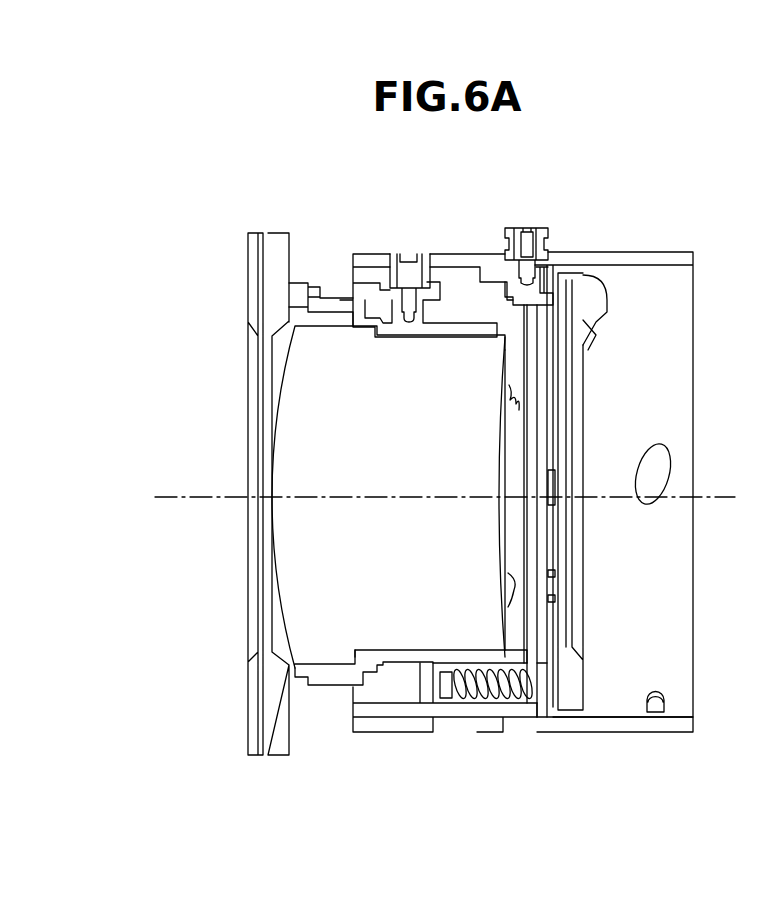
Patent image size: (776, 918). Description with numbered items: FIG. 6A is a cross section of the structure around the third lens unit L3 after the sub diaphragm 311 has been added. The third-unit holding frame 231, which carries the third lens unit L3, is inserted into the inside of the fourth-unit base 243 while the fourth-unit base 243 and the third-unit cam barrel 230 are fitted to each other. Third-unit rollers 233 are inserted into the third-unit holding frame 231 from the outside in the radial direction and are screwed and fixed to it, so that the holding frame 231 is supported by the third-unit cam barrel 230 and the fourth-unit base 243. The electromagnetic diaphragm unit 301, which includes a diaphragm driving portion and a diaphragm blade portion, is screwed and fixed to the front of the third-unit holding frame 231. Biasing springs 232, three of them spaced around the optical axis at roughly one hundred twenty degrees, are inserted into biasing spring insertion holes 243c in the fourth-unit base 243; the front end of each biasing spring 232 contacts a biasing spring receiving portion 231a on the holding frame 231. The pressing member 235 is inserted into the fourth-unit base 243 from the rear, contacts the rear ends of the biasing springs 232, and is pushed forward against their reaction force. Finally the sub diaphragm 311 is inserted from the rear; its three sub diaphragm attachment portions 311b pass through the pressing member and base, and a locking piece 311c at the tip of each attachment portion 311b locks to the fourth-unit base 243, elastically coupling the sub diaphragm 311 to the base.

The electromagnetic diaphragm unit 301 is at (253, 283).
The third lens unit L3 is at (312, 395).
The third-unit holding frame 231 is at (340, 297).
The third-unit cam barrel 230 is at (443, 257).
The third-unit roller 233 is at (402, 250).
The locking piece 311c is at (519, 302).
The sub diaphragm attachment portion 311b is at (548, 297).
The fourth-unit base 243 is at (655, 260).
The sub diaphragm 311 is at (577, 678).
The pressing member 235 is at (547, 387).
The biasing spring 232 is at (510, 407).
The biasing spring receiving portion 231a is at (442, 683).
The biasing spring insertion hole 243c is at (528, 700).